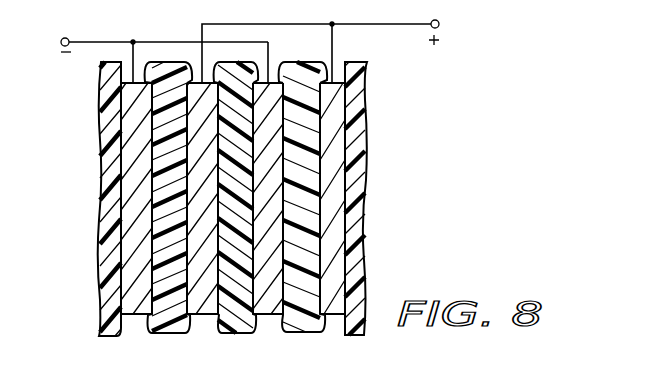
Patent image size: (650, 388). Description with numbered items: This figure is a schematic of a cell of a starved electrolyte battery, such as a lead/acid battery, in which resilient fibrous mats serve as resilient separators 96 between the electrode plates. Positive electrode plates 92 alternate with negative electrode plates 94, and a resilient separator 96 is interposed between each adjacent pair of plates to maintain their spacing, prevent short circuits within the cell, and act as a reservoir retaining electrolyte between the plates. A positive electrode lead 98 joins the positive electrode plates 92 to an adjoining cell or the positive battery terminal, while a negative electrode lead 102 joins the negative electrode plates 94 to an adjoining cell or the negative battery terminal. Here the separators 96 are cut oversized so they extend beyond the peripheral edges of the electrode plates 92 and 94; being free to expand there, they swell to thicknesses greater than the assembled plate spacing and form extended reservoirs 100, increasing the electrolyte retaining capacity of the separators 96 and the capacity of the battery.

The positive electrode plate 92 is at (205, 315).
The negative electrode plate 94 is at (133, 315).
The resilient separator 96 is at (387, 154).
The positive electrode lead 98 is at (360, 24).
The extended reservoir 100 is at (296, 340).
The negative electrode lead 102 is at (176, 42).